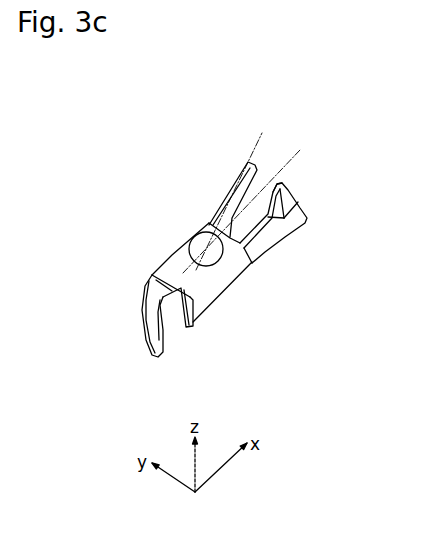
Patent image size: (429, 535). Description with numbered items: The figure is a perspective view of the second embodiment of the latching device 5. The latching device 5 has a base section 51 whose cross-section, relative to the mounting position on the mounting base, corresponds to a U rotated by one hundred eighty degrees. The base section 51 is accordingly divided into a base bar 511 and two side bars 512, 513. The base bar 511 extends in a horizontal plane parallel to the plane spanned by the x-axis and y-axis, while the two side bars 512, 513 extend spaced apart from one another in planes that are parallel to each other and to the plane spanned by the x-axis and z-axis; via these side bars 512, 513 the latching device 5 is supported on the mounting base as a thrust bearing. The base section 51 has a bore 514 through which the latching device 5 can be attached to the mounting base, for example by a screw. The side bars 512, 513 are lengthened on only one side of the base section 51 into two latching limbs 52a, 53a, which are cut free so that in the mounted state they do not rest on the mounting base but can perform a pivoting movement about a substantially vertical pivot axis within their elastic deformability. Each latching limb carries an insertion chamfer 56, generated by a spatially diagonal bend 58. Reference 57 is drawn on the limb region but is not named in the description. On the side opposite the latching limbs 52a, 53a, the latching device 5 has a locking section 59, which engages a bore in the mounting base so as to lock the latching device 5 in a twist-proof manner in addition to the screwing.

The latching device 5 is at (233, 108).
The base section 51 is at (207, 291).
The base bar 511 is at (178, 257).
The side bar 512 is at (196, 229).
The side bar 513 is at (234, 297).
The bore 514 is at (227, 255).
The latching limb 52a is at (219, 204).
The latching limb 53a is at (258, 239).
The insertion chamfer 56 is at (284, 200).
The flange tip 57 is at (300, 142).
The spatially diagonal bend 58 is at (282, 219).
The locking section 59 is at (150, 338).